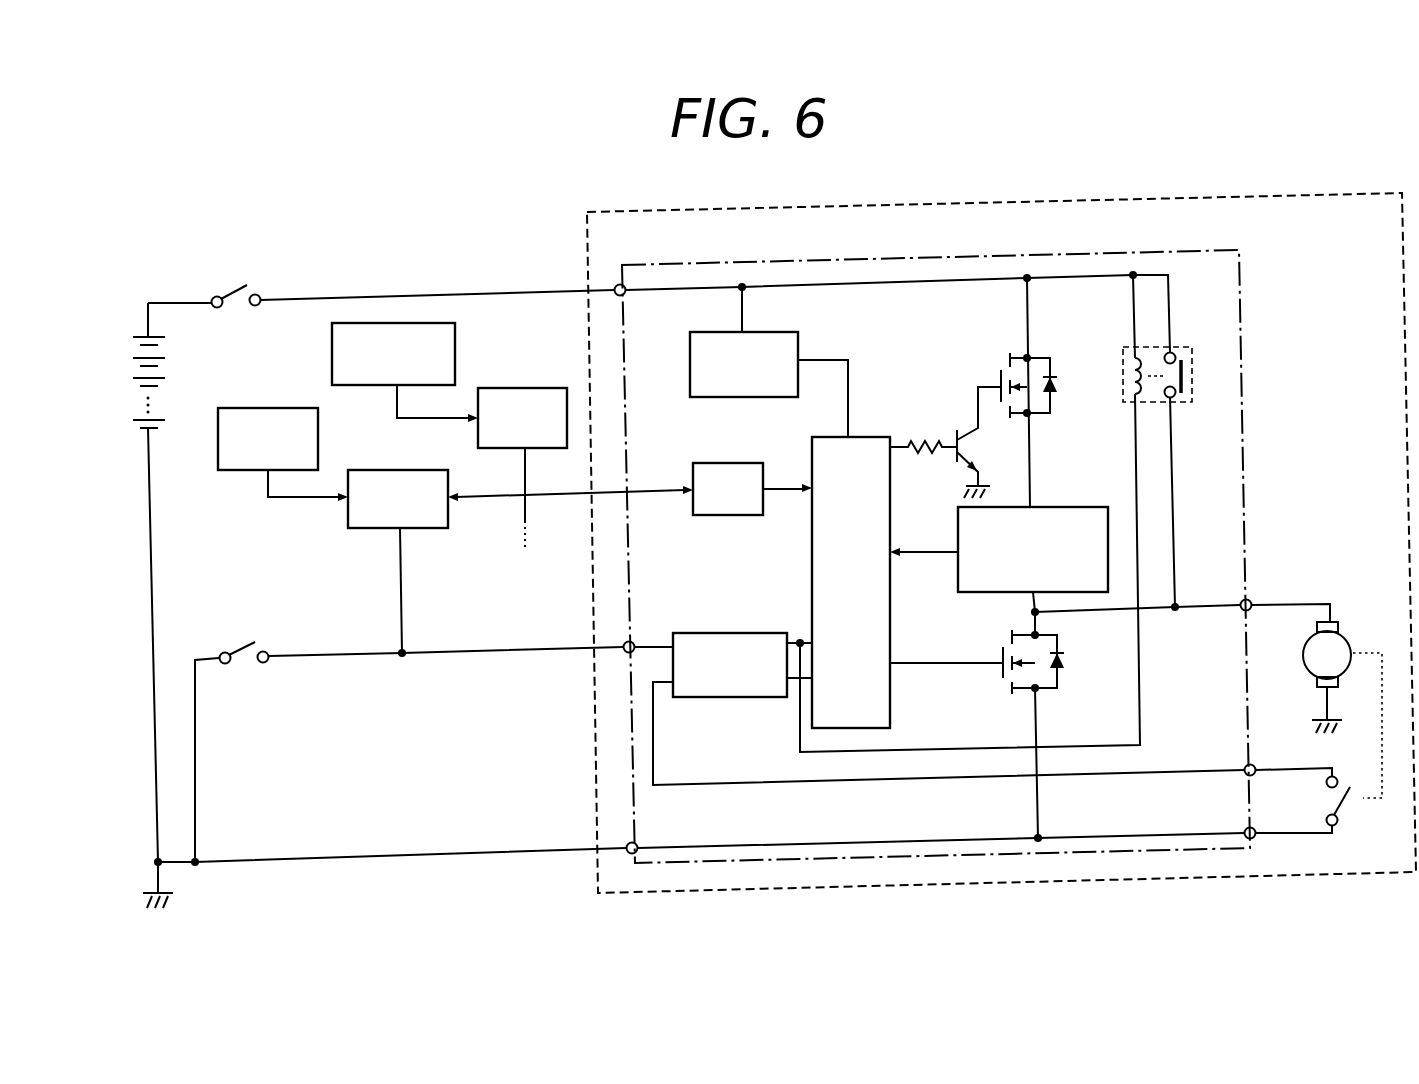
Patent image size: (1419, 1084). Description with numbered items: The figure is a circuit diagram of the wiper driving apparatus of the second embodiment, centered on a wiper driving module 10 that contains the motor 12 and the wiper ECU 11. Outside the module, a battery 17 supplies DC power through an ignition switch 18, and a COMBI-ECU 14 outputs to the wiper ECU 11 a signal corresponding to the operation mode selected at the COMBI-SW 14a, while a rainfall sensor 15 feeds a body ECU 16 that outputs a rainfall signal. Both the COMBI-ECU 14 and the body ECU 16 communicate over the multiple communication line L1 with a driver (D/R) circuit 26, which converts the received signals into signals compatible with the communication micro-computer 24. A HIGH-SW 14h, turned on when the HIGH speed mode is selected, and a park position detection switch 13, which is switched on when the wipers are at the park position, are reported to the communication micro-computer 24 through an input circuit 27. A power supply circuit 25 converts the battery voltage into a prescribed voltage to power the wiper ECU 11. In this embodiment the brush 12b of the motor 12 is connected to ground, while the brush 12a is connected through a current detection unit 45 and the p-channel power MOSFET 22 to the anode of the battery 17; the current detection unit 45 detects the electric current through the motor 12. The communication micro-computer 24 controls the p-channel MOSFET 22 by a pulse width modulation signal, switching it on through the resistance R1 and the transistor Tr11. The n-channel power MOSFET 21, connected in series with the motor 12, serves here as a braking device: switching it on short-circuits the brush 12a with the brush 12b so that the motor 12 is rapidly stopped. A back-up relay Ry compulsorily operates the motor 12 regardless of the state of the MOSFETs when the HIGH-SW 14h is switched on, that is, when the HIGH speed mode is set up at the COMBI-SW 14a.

The wiper driving module 10 is at (820, 208).
The wiper ECU 11 is at (963, 256).
The motor 12 is at (1347, 650).
The brush 12a is at (1333, 621).
The brush 12b is at (1339, 688).
The park position detection switch 13 is at (1350, 793).
The COMBI-ECU 14 is at (378, 469).
The COMBI-SW 14a is at (255, 407).
The HIGH-SW 14h is at (247, 664).
The rainfall sensor 15 is at (330, 344).
The body ECU 16 is at (530, 388).
The battery 17 is at (143, 337).
The ignition switch 18 is at (238, 284).
The n-channel power MOSFET 21 is at (1002, 678).
The p-channel power MOSFET 22 is at (998, 376).
The communication micro-computer 24 is at (862, 436).
The power supply circuit 25 is at (775, 332).
The driver (D/R) circuit 26 is at (737, 462).
The input circuit 27 is at (752, 632).
The current detection unit 45 is at (1093, 506).
The transistor Tr11 is at (963, 428).
The resistance R1 is at (930, 458).
The back-up relay Ry is at (1124, 396).
The multiple communication line L1 is at (497, 500).